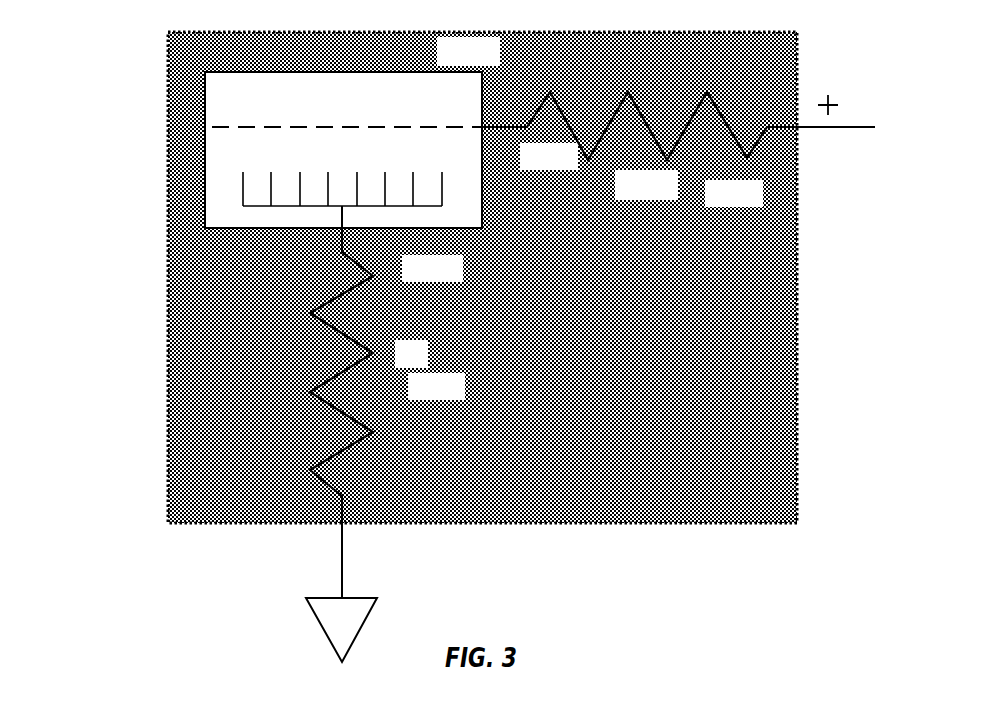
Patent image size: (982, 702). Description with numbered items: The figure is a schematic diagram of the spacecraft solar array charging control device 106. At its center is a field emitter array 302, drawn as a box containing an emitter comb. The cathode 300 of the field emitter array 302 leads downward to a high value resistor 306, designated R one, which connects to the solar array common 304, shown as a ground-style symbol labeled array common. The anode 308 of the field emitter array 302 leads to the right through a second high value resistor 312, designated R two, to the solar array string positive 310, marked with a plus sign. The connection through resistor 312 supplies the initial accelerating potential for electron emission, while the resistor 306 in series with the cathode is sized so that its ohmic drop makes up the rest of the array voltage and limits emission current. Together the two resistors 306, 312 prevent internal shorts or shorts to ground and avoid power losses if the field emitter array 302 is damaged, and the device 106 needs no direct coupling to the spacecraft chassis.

The spacecraft solar array charging control device 106 is at (128, 53).
The field emitter array 302 is at (349, 133).
The anode 308 is at (528, 149).
The high value resistor 312 is at (688, 152).
The solar array string positive 310 is at (827, 134).
The cathode 300 is at (397, 244).
The high value resistor 306 is at (378, 413).
The solar array common 304 is at (354, 579).